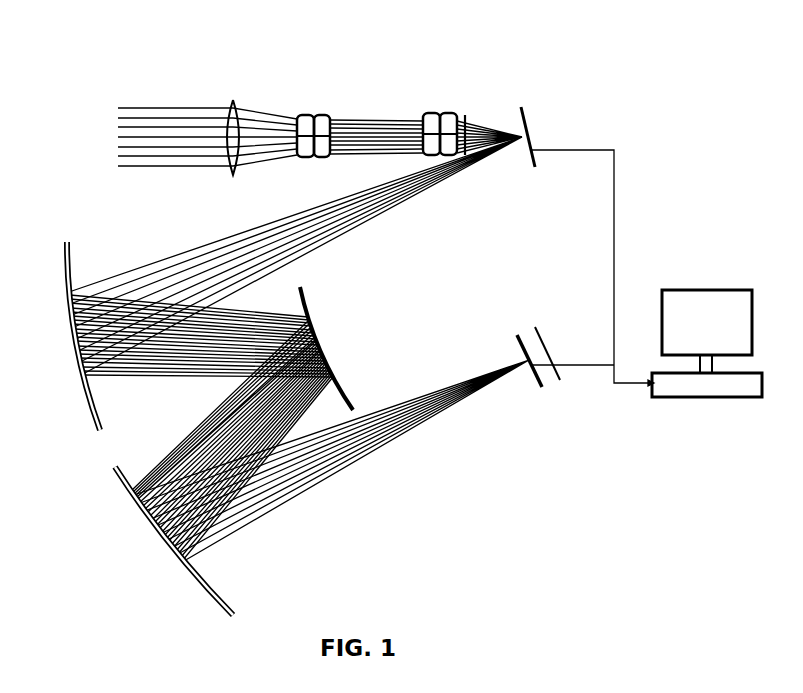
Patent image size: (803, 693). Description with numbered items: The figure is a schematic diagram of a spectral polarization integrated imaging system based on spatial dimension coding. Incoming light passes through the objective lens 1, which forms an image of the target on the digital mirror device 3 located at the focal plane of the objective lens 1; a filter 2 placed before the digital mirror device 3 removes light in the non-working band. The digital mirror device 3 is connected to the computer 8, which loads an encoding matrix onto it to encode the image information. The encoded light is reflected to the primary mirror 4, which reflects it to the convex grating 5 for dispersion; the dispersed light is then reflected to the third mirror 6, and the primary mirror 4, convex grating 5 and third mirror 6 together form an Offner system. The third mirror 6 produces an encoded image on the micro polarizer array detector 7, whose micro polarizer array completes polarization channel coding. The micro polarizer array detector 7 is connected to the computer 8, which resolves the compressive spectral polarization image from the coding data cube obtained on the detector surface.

The objective lens 1 is at (225, 97).
The filter 2 is at (485, 108).
The digital mirror device (DMD) 3 is at (587, 246).
The primary mirror 4 is at (67, 336).
The convex grating 5 is at (326, 348).
The third mirror 6 is at (174, 541).
The micro polarizer array detector 7 is at (565, 385).
The computer 8 is at (707, 366).